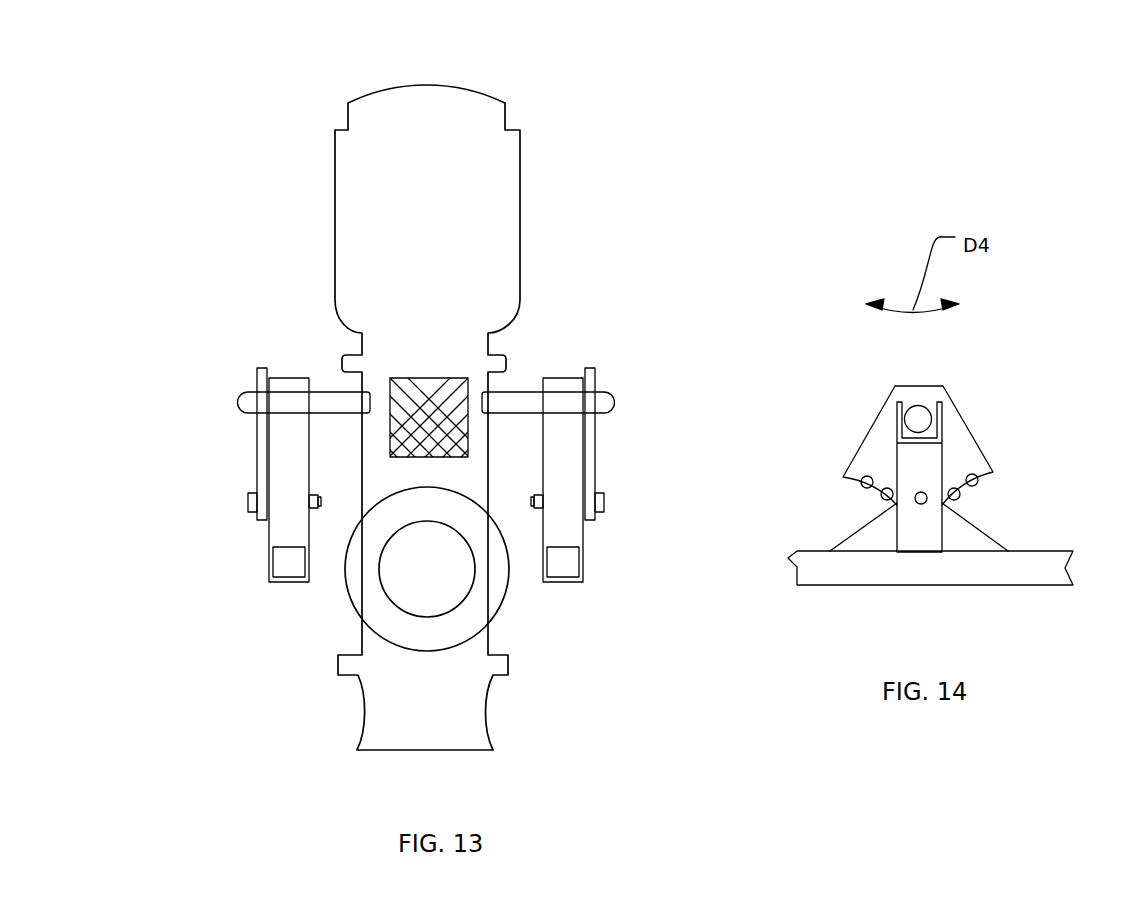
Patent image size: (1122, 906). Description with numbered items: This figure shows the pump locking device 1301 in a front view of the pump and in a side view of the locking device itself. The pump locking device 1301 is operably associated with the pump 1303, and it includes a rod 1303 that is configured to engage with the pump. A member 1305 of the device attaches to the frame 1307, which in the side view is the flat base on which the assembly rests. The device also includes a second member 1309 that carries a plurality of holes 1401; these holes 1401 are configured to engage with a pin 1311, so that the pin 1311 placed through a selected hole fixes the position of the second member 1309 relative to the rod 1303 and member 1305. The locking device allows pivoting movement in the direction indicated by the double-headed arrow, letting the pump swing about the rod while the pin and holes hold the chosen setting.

In FIG. 13, the pump locking device 1301 is at (630, 118).
In FIG. 13, the rod 1303 is at (335, 178).
In FIG. 14, the rod 1303 is at (928, 406).
In FIG. 13, the member 1305 is at (178, 389).
In FIG. 14, the member 1305 is at (829, 371).
In FIG. 13, the frame 1307 is at (270, 573).
In FIG. 14, the frame 1307 is at (882, 585).
In FIG. 13, the second member 1309 is at (257, 438).
In FIG. 14, the second member 1309 is at (863, 440).
In FIG. 13, the pin 1311 is at (247, 499).
In FIG. 14, the pin 1311 is at (913, 497).
In FIG. 14, the holes 1401 is at (978, 477).